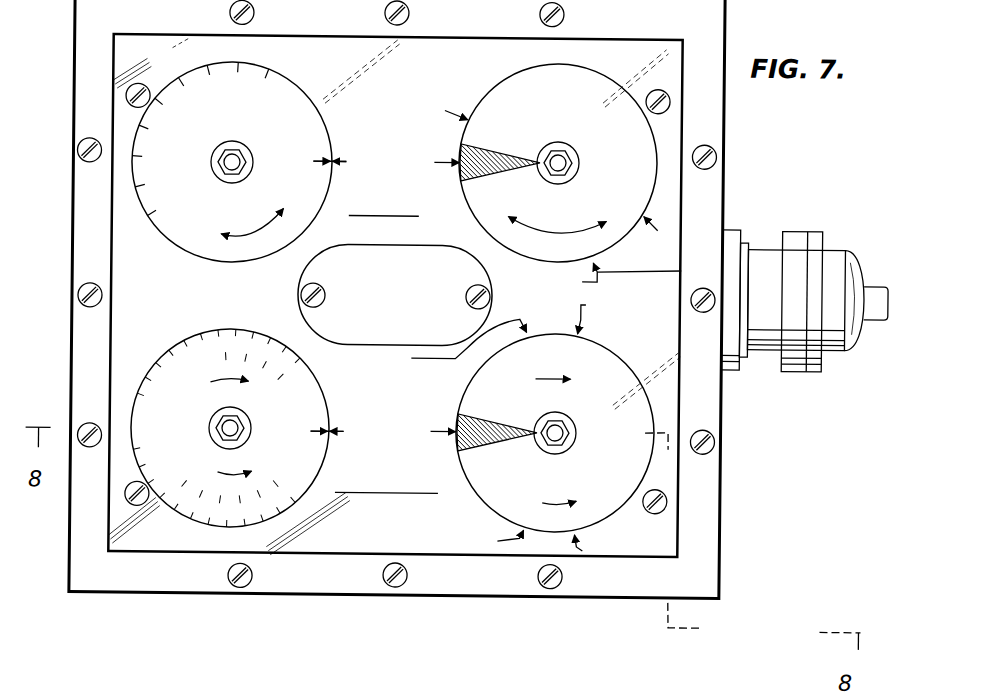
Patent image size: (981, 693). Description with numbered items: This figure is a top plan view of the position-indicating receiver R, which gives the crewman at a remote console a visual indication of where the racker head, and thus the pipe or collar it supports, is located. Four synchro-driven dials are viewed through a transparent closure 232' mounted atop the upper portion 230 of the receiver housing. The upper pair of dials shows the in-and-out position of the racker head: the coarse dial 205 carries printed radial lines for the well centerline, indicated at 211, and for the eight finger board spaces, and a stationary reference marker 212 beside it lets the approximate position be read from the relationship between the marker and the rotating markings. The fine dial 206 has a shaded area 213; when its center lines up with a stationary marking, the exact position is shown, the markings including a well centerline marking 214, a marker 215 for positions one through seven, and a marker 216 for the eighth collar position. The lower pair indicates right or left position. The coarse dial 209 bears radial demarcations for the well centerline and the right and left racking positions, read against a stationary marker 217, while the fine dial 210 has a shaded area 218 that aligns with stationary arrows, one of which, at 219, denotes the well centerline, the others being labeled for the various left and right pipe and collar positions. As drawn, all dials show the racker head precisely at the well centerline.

The indicator dial 205 is at (278, 91).
The indicator dial 206 is at (510, 82).
The indicator dial 209 is at (310, 494).
The indicator dial 210 is at (653, 408).
The well centerline radial line 211 is at (325, 151).
The reference marker 212 is at (384, 190).
The shaded area 213 is at (490, 153).
The well centerline marking 214 is at (432, 172).
The marker for positions P1 through P7 215 is at (657, 224).
The marker for position PC8 216 is at (658, 272).
The stationary marker 217 is at (374, 462).
The shaded area 218 is at (503, 423).
The well centerline arrow 219 is at (440, 427).
The upper portion of housing 230 is at (623, 581).
The transparent closure 232' is at (395, 334).
The position-indicating receiver R is at (724, 115).